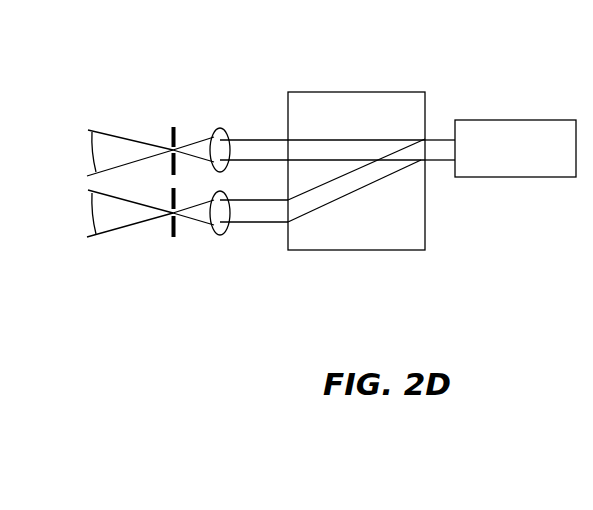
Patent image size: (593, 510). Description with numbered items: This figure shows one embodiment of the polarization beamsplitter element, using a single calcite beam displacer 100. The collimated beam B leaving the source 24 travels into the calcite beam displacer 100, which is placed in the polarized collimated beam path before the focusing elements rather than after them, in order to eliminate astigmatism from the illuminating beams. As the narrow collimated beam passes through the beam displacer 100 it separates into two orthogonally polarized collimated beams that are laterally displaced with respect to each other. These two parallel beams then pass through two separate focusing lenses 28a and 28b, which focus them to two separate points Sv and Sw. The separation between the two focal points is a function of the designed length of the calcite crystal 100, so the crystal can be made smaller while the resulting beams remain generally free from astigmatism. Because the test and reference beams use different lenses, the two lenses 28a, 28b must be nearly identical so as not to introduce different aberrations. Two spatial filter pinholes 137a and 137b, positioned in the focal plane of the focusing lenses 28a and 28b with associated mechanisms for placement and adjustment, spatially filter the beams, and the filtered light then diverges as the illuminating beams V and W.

The illuminating beam V is at (88, 131).
The illuminating beam W is at (92, 227).
The focal point Sv is at (168, 147).
The focal point Sw is at (165, 220).
The spatial filter pinhole 137a is at (175, 125).
The spatial filter pinhole 137b is at (176, 240).
The focusing lens 28a is at (222, 128).
The focusing lens 28b is at (225, 235).
The calcite beam displacer 100 is at (333, 90).
The source 24 is at (485, 118).
The collimated beam B is at (438, 162).